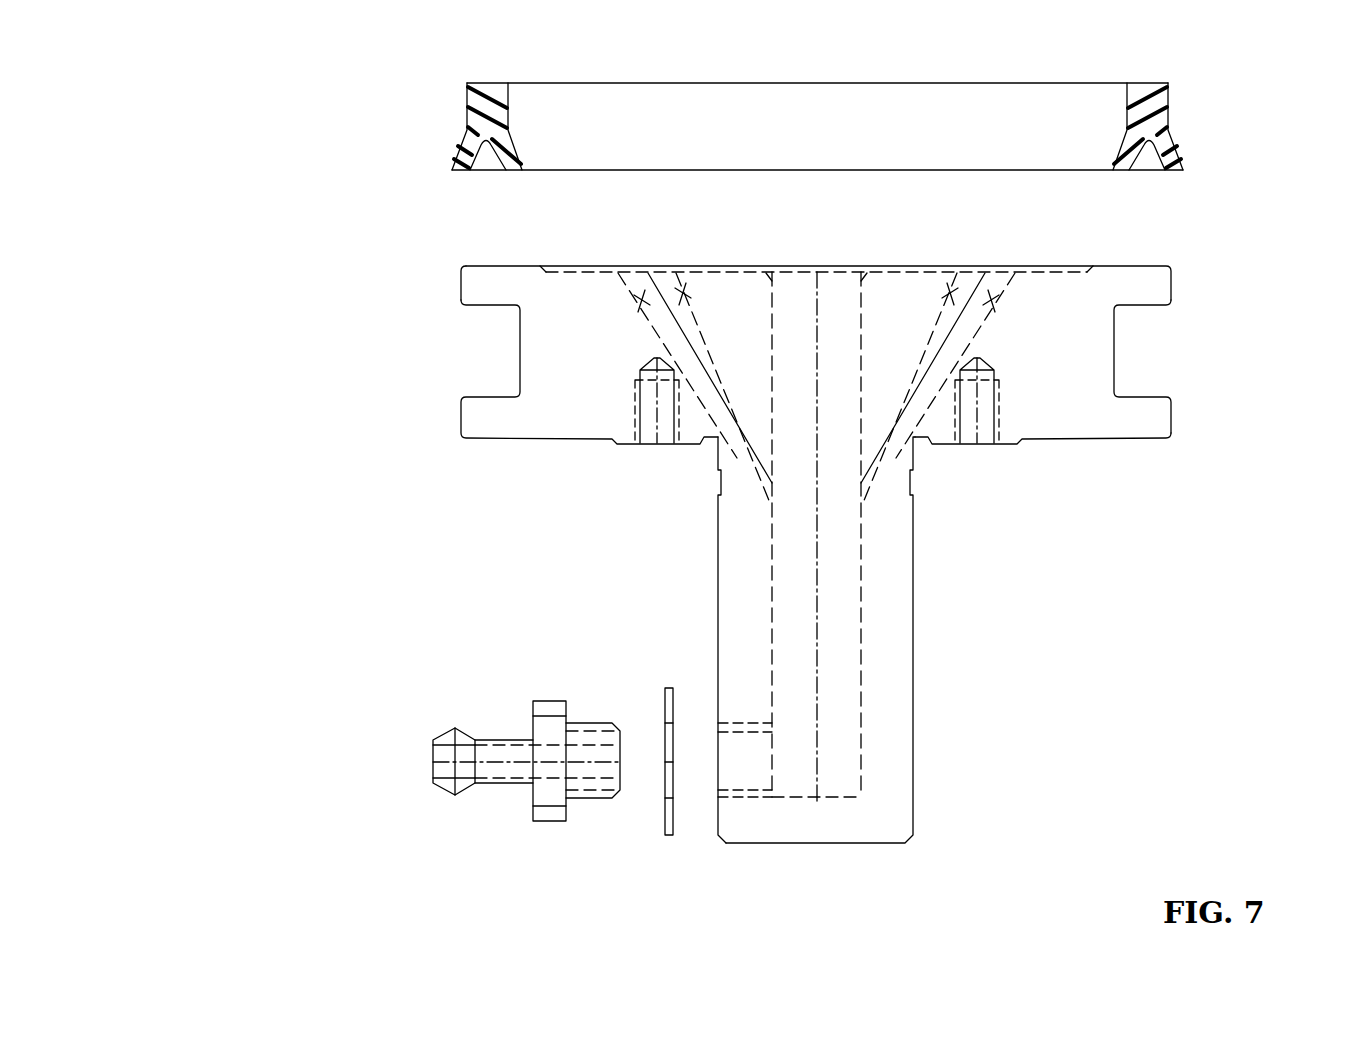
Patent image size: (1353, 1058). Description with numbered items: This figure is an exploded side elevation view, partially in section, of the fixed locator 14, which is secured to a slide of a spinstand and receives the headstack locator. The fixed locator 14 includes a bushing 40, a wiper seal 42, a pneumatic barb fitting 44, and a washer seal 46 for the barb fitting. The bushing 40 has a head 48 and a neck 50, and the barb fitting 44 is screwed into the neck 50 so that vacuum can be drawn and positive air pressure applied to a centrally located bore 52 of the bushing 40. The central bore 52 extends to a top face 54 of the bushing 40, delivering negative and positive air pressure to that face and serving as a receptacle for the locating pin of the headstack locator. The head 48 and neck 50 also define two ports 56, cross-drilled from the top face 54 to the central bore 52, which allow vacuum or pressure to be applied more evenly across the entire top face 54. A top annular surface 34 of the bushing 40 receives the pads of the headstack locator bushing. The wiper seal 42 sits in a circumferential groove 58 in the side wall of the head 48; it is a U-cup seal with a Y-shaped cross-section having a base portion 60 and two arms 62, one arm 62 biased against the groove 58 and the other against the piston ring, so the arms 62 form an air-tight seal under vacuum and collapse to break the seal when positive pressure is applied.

The fixed locator 14 is at (338, 410).
The top annular surface 34 is at (1138, 266).
The bushing 40 is at (706, 568).
The wiper seal 42 is at (1049, 72).
The pneumatic barb fitting 44 is at (508, 782).
The washer seal 46 is at (665, 832).
The head 48 is at (1068, 438).
The neck 50 is at (913, 697).
The central bore 52 is at (862, 581).
The top face 54 is at (921, 268).
The ports 56 is at (697, 281).
The circumferential groove 58 is at (1114, 355).
The base portion 60 is at (1168, 101).
The arms 62 is at (1180, 153).